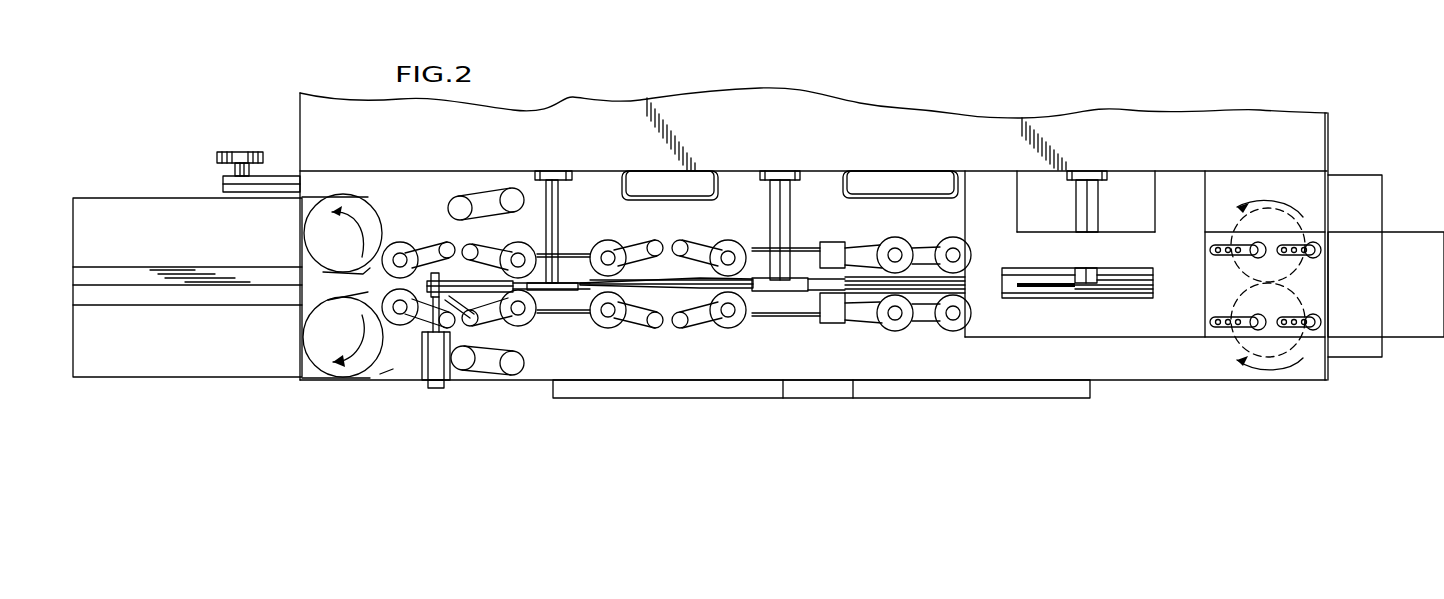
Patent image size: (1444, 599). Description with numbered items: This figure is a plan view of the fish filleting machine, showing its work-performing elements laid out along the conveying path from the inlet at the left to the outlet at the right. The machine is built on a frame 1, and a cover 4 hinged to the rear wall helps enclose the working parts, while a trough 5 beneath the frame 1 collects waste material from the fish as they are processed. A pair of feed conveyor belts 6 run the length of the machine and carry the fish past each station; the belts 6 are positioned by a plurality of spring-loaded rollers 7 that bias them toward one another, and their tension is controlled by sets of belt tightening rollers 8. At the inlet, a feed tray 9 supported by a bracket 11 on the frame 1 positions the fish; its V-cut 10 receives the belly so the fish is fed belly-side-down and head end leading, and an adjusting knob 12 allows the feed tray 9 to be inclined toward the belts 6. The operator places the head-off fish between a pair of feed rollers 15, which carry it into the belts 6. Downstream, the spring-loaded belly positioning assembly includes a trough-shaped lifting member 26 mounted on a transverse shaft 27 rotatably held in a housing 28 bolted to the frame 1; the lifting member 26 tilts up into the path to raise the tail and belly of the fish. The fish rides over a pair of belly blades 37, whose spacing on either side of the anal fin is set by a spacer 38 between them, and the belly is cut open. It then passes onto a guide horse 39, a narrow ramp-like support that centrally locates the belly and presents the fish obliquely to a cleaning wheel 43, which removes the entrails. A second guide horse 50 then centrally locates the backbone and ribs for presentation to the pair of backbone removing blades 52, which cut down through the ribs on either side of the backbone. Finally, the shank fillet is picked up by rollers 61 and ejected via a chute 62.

The frame 1 is at (1130, 383).
The cover 4 is at (797, 137).
The trough 5 is at (915, 398).
The feed conveyor belts 6 is at (360, 198).
The spring-loaded rollers 7 is at (404, 243).
The belt tightening rollers 8 is at (492, 196).
The feed tray 9 is at (112, 198).
The V-cut 10 is at (143, 285).
The bracket 11 is at (277, 176).
The adjusting knob 12 is at (232, 152).
The feed rollers 15 is at (304, 236).
The lifting member 26 is at (486, 272).
The shaft 27 is at (440, 320).
The housing 28 is at (424, 368).
The belly blades 37 is at (576, 272).
The spacer 38 is at (580, 290).
The guide horse 39 is at (660, 300).
The cleaning wheel 43 is at (778, 292).
The second guide horse 50 is at (930, 330).
The backbone removing blades 52 is at (1040, 283).
The rollers 61 is at (1298, 226).
The chute 62 is at (1403, 232).